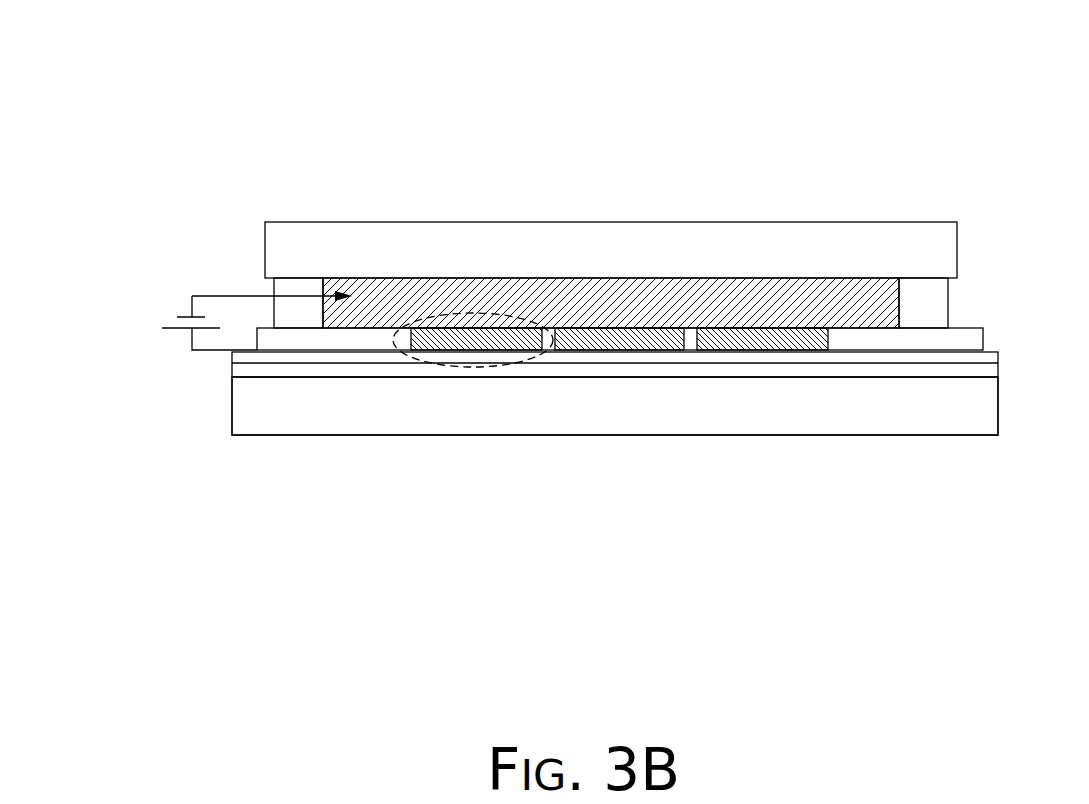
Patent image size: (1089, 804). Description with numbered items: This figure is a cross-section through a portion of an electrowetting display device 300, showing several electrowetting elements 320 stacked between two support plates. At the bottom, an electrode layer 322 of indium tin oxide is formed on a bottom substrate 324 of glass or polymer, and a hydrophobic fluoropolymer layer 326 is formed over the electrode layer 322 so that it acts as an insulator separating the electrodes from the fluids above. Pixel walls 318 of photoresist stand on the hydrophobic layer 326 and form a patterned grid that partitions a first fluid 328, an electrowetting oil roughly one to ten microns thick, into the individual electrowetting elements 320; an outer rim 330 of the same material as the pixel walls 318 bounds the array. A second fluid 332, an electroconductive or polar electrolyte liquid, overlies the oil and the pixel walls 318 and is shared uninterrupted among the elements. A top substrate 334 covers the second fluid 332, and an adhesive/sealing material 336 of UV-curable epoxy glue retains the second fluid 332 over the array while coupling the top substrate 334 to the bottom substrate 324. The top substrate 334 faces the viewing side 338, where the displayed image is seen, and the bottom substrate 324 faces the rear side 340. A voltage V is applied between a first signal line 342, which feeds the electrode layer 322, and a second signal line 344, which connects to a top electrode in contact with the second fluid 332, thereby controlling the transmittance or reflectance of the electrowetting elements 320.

The electrowetting display device 300 is at (807, 72).
The pixel walls 318 is at (690, 352).
The electrowetting elements 320 is at (480, 368).
The electrode layer 322 is at (232, 370).
The bottom substrate 324 is at (297, 420).
The hydrophobic layer 326 is at (230, 357).
The first fluid 328 is at (745, 352).
The outer rim 330 is at (918, 352).
The second fluid 332 is at (677, 277).
The top substrate 334 is at (328, 262).
The adhesive/sealing material 336 is at (948, 300).
The viewing side 338 is at (434, 166).
The rear side 340 is at (412, 478).
The first signal line 342 is at (190, 349).
The second signal line 344 is at (250, 295).